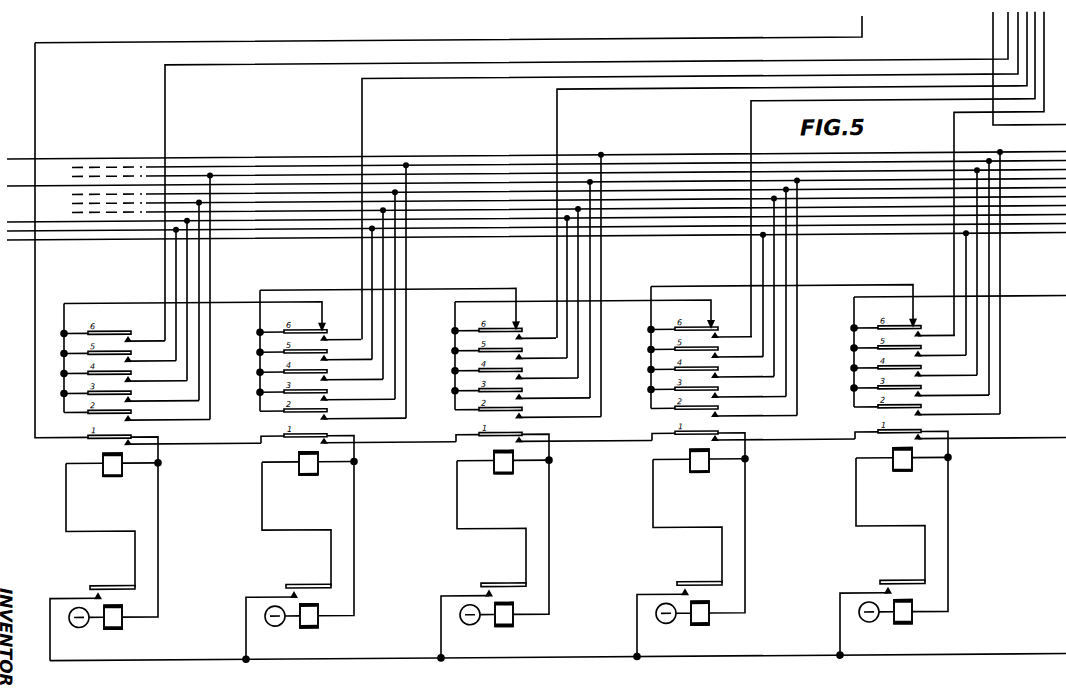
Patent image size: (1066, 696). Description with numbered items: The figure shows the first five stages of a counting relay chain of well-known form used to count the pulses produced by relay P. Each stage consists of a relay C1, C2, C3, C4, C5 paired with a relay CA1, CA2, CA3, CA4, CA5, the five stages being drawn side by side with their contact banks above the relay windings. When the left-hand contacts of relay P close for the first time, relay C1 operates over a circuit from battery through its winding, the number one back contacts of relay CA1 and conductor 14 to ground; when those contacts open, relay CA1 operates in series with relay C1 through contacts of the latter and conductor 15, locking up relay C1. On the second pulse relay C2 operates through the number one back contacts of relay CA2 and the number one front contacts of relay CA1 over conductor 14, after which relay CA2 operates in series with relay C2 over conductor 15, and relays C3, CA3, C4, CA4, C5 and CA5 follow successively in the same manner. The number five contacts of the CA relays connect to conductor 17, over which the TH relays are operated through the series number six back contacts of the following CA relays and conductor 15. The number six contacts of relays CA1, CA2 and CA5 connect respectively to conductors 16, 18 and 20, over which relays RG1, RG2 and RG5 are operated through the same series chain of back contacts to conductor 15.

The conductor 14 is at (864, 28).
The conductor 15 is at (992, 32).
The conductor 16 is at (164, 131).
The conductor 17 is at (100, 234).
The conductor 18 is at (362, 133).
The conductor 20 is at (954, 134).
The counting relay CA1 is at (113, 480).
The counting relay CA2 is at (309, 480).
The counting relay CA3 is at (504, 480).
The counting relay CA4 is at (700, 480).
The counting relay CA5 is at (903, 480).
The counting relay C1 is at (112, 631).
The counting relay C2 is at (308, 631).
The counting relay C3 is at (503, 631).
The counting relay C4 is at (699, 631).
The counting relay C5 is at (902, 631).